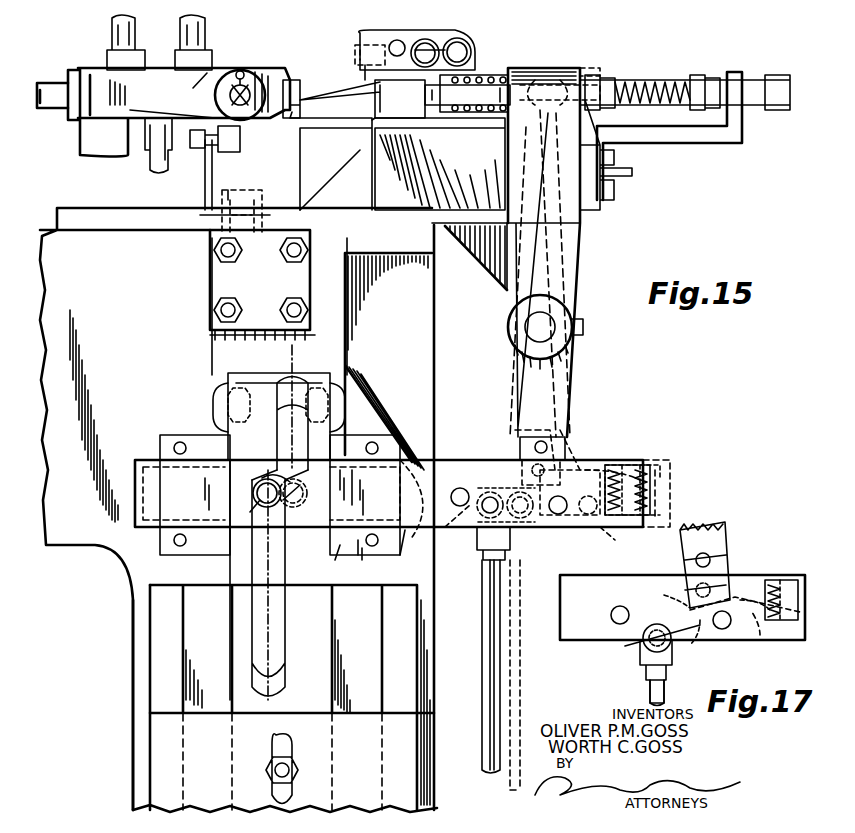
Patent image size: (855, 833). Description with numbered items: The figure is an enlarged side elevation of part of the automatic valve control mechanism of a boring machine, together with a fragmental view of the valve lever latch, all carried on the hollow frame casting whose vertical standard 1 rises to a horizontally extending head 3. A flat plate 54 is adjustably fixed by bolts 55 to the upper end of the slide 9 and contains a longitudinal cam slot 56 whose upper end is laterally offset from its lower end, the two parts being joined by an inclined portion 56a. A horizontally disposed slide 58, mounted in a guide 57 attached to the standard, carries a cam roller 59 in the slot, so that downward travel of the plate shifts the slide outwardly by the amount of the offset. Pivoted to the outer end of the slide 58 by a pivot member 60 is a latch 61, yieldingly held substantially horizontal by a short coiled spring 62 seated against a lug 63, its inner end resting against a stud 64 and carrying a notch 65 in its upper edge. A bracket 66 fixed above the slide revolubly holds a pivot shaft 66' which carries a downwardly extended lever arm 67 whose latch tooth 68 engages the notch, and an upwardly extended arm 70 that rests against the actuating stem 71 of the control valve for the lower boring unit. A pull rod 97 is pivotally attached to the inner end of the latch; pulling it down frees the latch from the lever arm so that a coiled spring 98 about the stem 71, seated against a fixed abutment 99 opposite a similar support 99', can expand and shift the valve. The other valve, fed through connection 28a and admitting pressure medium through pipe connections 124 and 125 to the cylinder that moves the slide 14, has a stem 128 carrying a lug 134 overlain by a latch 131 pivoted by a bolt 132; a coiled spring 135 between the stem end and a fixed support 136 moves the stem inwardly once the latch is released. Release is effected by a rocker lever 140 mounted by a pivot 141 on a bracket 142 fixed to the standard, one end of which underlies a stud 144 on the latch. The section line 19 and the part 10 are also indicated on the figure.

In FIG. 15, the vertical standard 1 is at (133, 684).
In FIG. 15, the head portion 3 is at (92, 552).
In FIG. 15, the slide 9 is at (160, 762).
In FIG. 15, the bed 10 is at (150, 705).
In FIG. 15, the slide 14 is at (262, 823).
In FIG. 15, the section line 19 is at (293, 367).
In FIG. 15, the connection 28a is at (150, 162).
In FIG. 15, the flat plate 54 is at (320, 622).
In FIG. 15, the bolts 55 is at (292, 767).
In FIG. 15, the cam slot 56 is at (252, 568).
In FIG. 15, the inclined portion 56a is at (262, 482).
In FIG. 15, the guide 57 is at (375, 404).
In FIG. 15, the slide 58 is at (448, 460).
In FIG. 15, the cam roller 59 is at (253, 495).
In FIG. 15, the pivot member 60 is at (563, 510).
In FIG. 17, the pivot member 60 is at (728, 634).
In FIG. 15, the latch 61 is at (440, 550).
In FIG. 17, the latch 61 is at (762, 642).
In FIG. 15, the coiled spring 62 is at (652, 478).
In FIG. 17, the coiled spring 62 is at (762, 582).
In FIG. 15, the lug 63 is at (630, 462).
In FIG. 17, the lug 63 is at (778, 582).
In FIG. 15, the stud 64 is at (466, 488).
In FIG. 17, the stud 64 is at (612, 617).
In FIG. 15, the notch 65 is at (480, 554).
In FIG. 17, the notch 65 is at (700, 647).
In FIG. 15, the bracket 66 is at (476, 263).
In FIG. 15, the pivot shaft 66' is at (524, 332).
In FIG. 15, the lever arm 67 is at (575, 398).
In FIG. 17, the lever arm 67 is at (722, 530).
In FIG. 15, the latch tooth 68 is at (534, 530).
In FIG. 17, the latch tooth 68 is at (685, 602).
In FIG. 15, the arm 70 is at (582, 230).
In FIG. 15, the actuating stem 71 is at (585, 72).
In FIG. 15, the pull rod 97 is at (482, 672).
In FIG. 17, the pull rod 97 is at (650, 694).
In FIG. 15, the coiled spring 98 is at (470, 77).
In FIG. 15, the fixed abutment 99 is at (343, 161).
In FIG. 15, the support 99' is at (561, 63).
In FIG. 15, the pipe connection 124 is at (205, 37).
In FIG. 15, the pipe connection 125 is at (110, 24).
In FIG. 15, the valve stem 128 is at (468, 108).
In FIG. 15, the latch 131 is at (410, 40).
In FIG. 15, the bolt 132 is at (465, 44).
In FIG. 15, the lug 134 is at (375, 110).
In FIG. 15, the coiled spring 135 is at (660, 82).
In FIG. 15, the fixed support 136 is at (705, 143).
In FIG. 15, the rocker lever 140 is at (207, 73).
In FIG. 15, the pivot 141 is at (255, 80).
In FIG. 15, the bracket 142 is at (210, 192).
In FIG. 15, the stud 144 is at (397, 40).